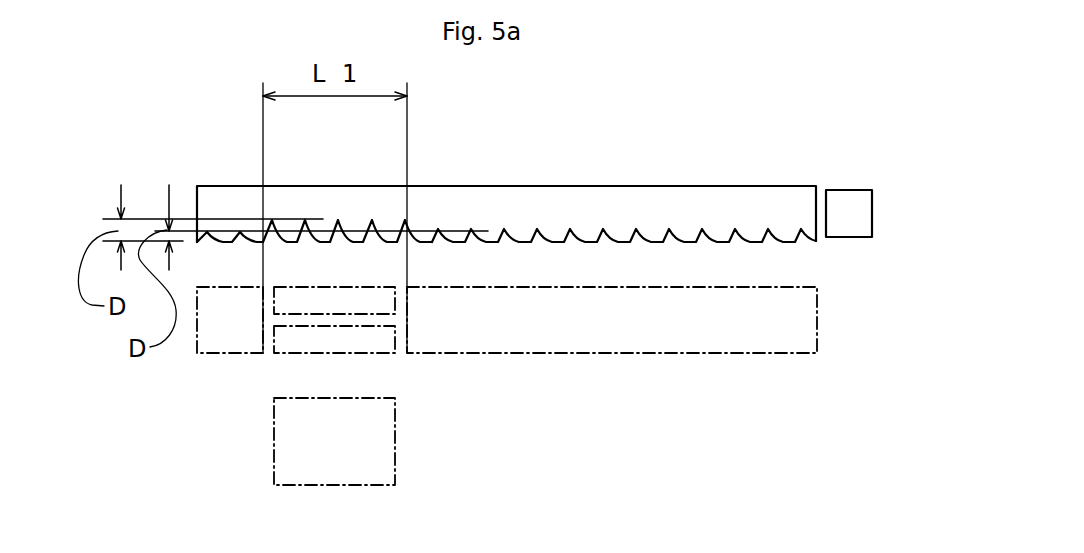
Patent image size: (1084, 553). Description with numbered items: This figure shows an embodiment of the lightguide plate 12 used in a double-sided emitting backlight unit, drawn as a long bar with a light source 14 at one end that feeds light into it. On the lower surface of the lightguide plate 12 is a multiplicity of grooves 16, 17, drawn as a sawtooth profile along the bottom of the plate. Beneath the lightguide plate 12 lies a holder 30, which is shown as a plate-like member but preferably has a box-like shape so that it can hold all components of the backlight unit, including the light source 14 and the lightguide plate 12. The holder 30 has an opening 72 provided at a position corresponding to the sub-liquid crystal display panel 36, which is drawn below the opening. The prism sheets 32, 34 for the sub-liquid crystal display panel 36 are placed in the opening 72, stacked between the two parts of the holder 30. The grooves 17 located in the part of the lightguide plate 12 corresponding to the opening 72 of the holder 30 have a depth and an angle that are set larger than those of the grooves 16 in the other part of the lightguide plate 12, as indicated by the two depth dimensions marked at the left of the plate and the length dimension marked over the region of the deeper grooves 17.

The lightguide plate 12 is at (755, 212).
The light source 14 is at (852, 208).
The grooves 16 is at (572, 238).
The grooves 17 is at (372, 237).
The holder 30 is at (225, 340).
The prism sheet 32 is at (391, 299).
The prism sheet 34 is at (378, 342).
The sub-liquid crystal display panel 36 is at (378, 447).
The opening 72 is at (259, 366).